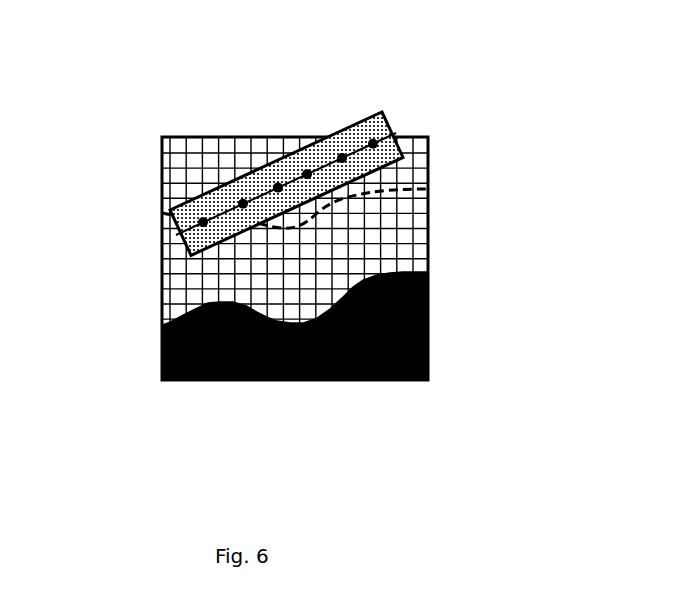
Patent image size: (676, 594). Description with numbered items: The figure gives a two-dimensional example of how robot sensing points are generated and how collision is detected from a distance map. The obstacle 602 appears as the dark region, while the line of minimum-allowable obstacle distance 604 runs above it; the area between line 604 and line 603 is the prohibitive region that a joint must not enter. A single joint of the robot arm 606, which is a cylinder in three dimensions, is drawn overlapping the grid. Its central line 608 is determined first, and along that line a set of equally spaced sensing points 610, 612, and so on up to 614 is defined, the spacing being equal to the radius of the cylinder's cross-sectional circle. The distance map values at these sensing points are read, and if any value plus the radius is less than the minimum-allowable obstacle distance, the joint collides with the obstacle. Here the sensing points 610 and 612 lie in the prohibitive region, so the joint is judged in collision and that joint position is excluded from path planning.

The obstacle 602 is at (402, 380).
The line 603 is at (435, 280).
The line of minimum-allowable obstacle distance 604 is at (410, 191).
The joint of the robot arm 606 is at (357, 123).
The central line 608 is at (268, 165).
The sensing point 610 is at (160, 222).
The sensing point 612 is at (222, 188).
The sensing point 614 is at (395, 124).